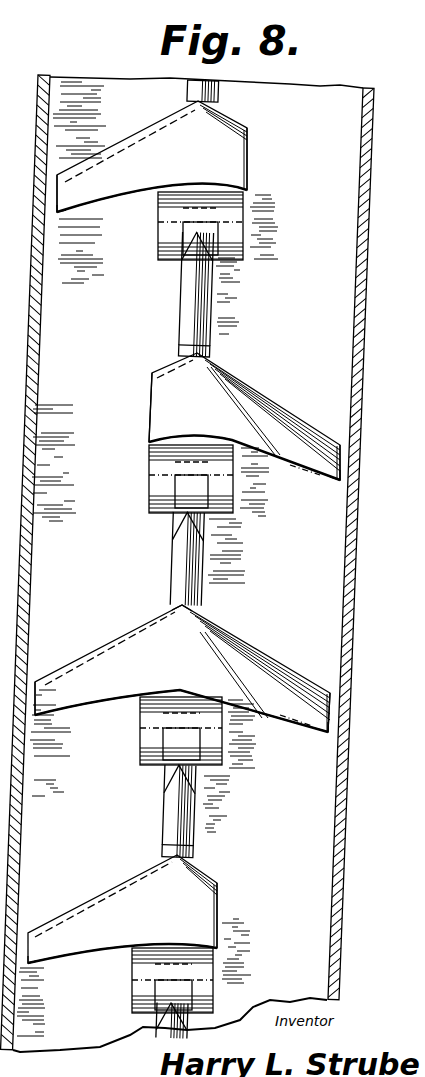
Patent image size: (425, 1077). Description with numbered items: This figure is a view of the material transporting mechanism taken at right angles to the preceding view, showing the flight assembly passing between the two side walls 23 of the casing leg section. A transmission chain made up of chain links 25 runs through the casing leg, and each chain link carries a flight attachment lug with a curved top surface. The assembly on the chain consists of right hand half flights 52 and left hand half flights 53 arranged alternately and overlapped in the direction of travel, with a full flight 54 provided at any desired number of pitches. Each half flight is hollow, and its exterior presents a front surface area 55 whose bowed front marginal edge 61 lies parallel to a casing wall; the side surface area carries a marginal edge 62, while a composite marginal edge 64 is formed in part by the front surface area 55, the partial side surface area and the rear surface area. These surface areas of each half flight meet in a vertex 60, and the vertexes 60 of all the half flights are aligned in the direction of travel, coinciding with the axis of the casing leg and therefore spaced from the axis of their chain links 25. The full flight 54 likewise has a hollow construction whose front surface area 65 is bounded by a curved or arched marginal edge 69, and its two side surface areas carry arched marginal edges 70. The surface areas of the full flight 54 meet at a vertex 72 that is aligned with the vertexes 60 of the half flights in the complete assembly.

The side walls 23 is at (354, 596).
The chain links 25 is at (182, 300).
The right hand half flight 52 is at (340, 482).
The left hand half flight 53 is at (57, 213).
The full flight 54 is at (328, 735).
The front surface area 55 is at (184, 532).
The vertex 60 is at (220, 94).
The front marginal edge 61 is at (136, 197).
The marginal edge 62 is at (57, 186).
The composite marginal edge 64 is at (248, 164).
The front surface area 65 is at (182, 668).
The marginal edge 69 is at (104, 704).
The marginal edges 70 is at (37, 680).
The vertex 72 is at (181, 601).